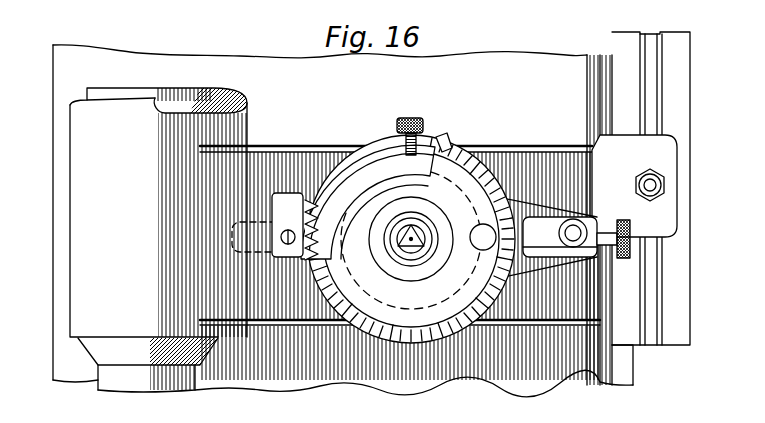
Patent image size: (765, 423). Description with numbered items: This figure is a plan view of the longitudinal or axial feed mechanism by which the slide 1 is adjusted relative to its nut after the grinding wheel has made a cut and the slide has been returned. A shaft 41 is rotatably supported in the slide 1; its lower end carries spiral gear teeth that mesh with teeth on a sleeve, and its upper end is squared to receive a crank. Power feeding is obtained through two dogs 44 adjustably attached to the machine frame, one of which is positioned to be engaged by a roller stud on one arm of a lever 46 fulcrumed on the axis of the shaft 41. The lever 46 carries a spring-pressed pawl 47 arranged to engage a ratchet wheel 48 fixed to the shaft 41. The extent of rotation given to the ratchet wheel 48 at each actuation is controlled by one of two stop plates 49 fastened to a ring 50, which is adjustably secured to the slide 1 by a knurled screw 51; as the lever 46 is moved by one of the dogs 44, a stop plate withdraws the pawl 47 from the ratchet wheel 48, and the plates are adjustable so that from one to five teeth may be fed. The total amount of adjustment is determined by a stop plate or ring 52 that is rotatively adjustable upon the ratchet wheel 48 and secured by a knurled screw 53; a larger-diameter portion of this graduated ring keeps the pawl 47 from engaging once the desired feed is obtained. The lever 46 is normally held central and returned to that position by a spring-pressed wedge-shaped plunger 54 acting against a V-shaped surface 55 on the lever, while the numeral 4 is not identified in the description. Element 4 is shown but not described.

The slide 1 is at (63, 70).
The cylinder 4 is at (158, 239).
The shaft 41 is at (418, 252).
The dogs 44 is at (634, 186).
The lever 46 is at (357, 195).
The spring-pressed pawl 47 is at (568, 215).
The ratchet wheel 48 is at (444, 152).
The stop plates 49 is at (514, 177).
The ring 50 is at (377, 160).
The knurled screw 51 is at (421, 124).
The stop plate or ring 52 is at (477, 178).
The knurled screw 53 is at (483, 250).
The spring-pressed wedge-shaped plunger 54 is at (332, 238).
The V-shaped surface 55 is at (313, 205).